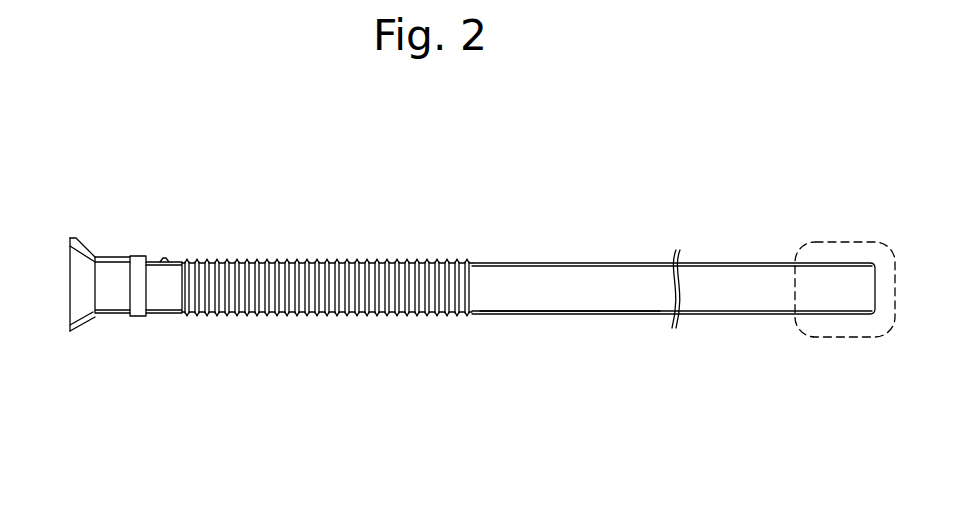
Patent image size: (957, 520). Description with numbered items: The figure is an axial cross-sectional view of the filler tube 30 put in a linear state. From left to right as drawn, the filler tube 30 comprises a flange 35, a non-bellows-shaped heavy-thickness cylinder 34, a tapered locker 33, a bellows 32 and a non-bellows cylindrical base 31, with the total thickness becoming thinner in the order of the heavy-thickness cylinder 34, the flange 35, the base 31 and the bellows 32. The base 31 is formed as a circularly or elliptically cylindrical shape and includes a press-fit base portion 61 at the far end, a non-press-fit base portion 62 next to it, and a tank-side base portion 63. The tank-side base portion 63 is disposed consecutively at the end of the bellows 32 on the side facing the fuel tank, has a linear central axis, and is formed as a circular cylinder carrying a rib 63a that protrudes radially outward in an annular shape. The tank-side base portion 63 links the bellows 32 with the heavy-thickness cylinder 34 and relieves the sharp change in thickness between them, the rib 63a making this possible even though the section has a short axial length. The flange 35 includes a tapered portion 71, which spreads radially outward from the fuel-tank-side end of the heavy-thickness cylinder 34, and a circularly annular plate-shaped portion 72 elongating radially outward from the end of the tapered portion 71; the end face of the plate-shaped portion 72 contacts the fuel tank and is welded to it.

The filler tube 30 is at (746, 215).
The non-bellows cylindrical base 31 is at (592, 262).
The bellows 32 is at (318, 259).
The tapered locker 33 is at (138, 258).
The non-bellows-shaped heavy-thickness cylinder 34 is at (112, 257).
The flange 35 is at (38, 435).
The press-fit base portion 61 is at (847, 339).
The non-press-fit base portion 62 is at (578, 316).
The tank-side base portion 63 is at (171, 315).
The rib 63a is at (160, 315).
The tapered portion 71 is at (89, 320).
The circularly annular plate-shaped portion 72 is at (73, 332).